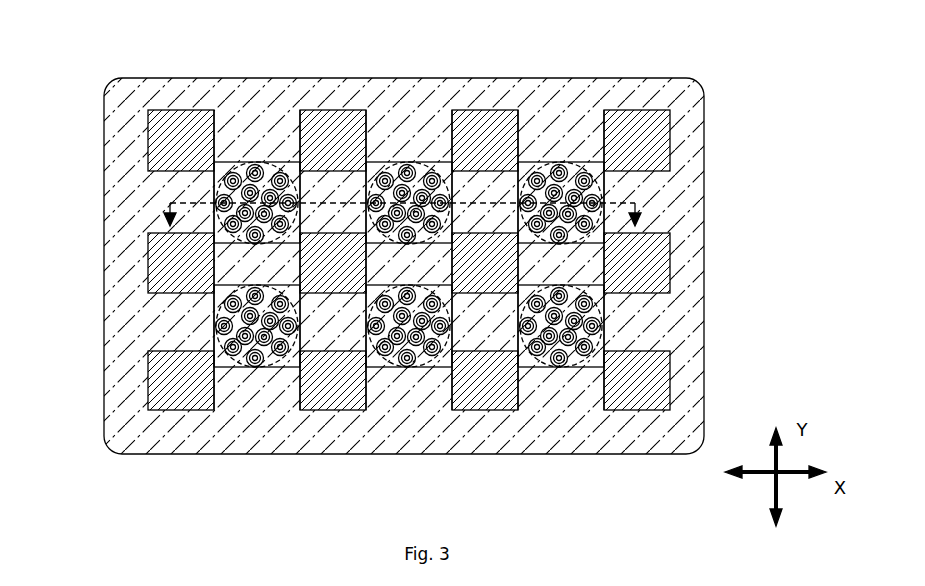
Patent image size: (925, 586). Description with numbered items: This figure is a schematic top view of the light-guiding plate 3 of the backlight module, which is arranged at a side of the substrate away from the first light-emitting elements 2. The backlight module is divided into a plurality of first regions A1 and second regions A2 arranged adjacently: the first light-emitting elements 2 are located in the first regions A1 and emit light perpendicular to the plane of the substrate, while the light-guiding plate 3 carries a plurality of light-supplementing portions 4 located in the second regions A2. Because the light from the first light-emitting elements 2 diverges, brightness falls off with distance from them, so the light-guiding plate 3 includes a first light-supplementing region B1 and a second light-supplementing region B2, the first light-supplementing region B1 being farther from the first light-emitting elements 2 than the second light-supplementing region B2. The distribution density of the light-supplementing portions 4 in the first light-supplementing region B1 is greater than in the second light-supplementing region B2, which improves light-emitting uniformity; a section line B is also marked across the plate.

The first light-emitting element 2 is at (459, 215).
The light-guiding plate 3 is at (678, 360).
The light-supplementing portion 4 is at (397, 189).
The first region A1 is at (488, 140).
The second region A2 is at (258, 163).
The first light-supplementing region B1 is at (222, 300).
The second light-supplementing region B2 is at (225, 352).
The section line B- B is at (406, 212).